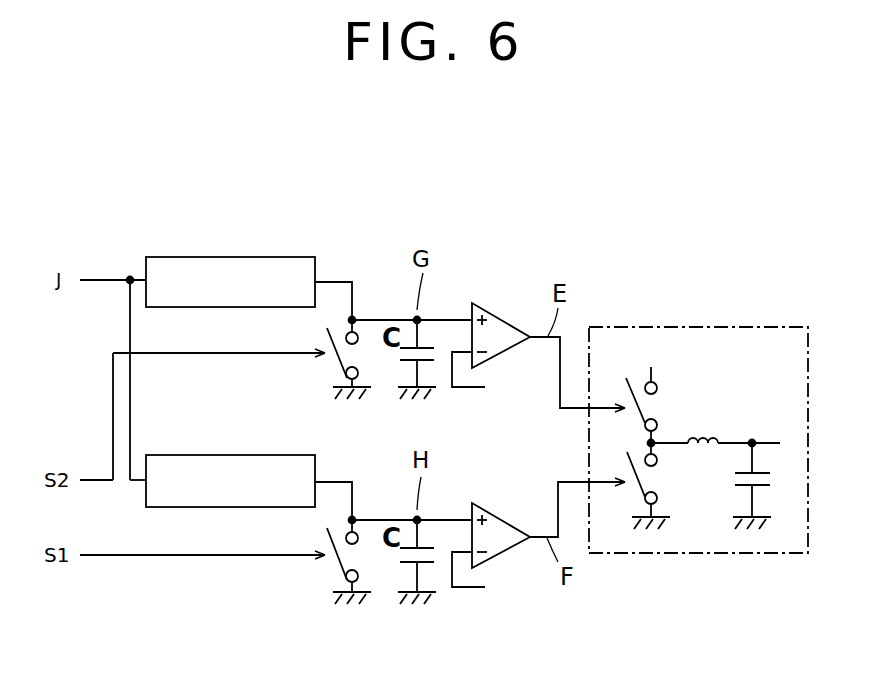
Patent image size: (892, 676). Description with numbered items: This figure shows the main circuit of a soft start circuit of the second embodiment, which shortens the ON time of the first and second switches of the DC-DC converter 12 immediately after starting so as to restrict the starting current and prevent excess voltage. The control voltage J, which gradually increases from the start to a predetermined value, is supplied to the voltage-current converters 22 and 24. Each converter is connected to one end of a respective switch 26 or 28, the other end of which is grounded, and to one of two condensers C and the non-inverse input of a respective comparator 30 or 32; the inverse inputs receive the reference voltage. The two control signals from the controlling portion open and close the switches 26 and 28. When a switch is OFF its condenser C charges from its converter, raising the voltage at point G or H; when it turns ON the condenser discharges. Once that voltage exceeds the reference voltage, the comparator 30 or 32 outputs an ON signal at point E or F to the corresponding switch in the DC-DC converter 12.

The DC-DC converter 12 is at (715, 325).
The voltage-current converter 22 is at (275, 256).
The voltage-current converter 24 is at (273, 455).
The switch 26 is at (327, 343).
The switch 28 is at (327, 568).
The comparator 30 is at (504, 310).
The comparator 32 is at (504, 510).